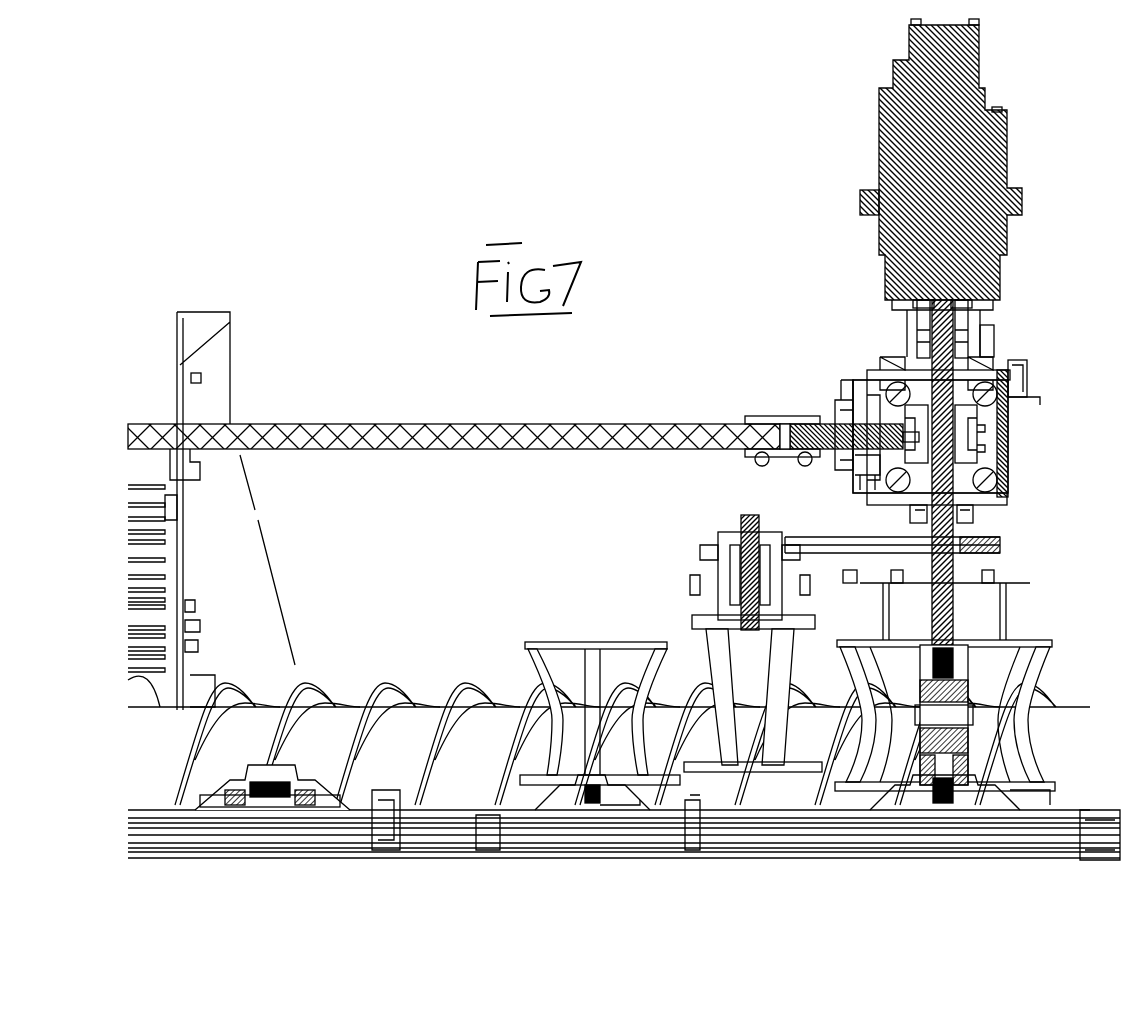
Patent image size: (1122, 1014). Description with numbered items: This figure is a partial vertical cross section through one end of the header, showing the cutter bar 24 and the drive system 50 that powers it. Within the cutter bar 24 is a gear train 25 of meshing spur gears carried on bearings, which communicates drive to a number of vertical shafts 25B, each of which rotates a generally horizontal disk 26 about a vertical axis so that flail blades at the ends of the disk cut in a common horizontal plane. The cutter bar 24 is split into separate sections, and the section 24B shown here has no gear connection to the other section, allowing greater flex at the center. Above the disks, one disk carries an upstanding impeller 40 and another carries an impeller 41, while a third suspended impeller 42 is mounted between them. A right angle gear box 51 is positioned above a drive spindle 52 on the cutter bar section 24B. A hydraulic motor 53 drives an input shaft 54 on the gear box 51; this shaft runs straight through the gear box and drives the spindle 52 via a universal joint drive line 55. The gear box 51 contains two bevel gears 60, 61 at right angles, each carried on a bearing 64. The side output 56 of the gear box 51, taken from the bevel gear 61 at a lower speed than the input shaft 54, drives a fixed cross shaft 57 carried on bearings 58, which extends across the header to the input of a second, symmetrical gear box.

The cutter bar 24 is at (378, 792).
The cutter bar section 24B is at (497, 848).
The gear train 25 is at (415, 845).
The vertical shaft 25B is at (270, 757).
The disk 26 is at (695, 850).
The impeller 40 is at (843, 662).
The impeller 41 is at (598, 640).
The suspended impeller 42 is at (715, 655).
The drive system 50 is at (773, 313).
The right angle gear box 51 is at (1010, 432).
The drive spindle 52 is at (985, 545).
The hydraulic motor 53 is at (998, 237).
The input shaft 54 is at (990, 352).
The universal joint drive line 55 is at (1000, 637).
The side output 56 is at (838, 418).
The fixed cross shaft 57 is at (655, 424).
The bearings 58 is at (200, 424).
The bevel gear 60 is at (907, 355).
The bevel gear 61 is at (862, 460).
The bearing 64 is at (872, 362).